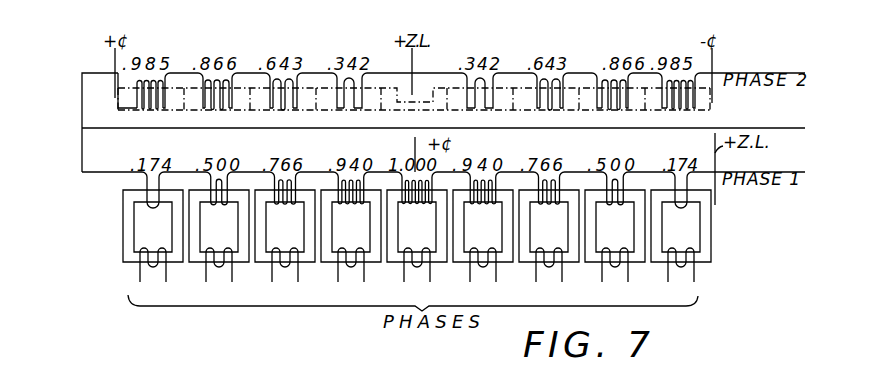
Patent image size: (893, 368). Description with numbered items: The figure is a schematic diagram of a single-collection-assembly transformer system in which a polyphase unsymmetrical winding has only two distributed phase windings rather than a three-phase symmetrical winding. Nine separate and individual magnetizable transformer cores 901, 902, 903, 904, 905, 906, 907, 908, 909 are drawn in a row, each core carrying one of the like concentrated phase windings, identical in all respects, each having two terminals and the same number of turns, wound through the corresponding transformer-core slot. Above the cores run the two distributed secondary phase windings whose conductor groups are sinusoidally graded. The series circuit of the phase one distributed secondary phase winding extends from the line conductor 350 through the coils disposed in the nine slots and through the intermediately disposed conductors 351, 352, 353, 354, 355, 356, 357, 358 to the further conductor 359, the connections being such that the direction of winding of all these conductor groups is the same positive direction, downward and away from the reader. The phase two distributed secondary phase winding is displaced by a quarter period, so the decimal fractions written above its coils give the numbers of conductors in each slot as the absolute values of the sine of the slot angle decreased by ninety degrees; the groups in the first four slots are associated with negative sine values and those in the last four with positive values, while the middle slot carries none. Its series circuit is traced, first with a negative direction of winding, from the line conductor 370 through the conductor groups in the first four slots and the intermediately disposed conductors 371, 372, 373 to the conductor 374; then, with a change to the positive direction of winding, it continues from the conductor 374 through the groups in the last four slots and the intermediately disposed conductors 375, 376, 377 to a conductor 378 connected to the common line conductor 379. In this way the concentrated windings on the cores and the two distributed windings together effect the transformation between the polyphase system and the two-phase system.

The line conductor 350 is at (738, 167).
The intermediately disposed conductor 351 is at (662, 171).
The intermediately disposed conductor 352 is at (597, 171).
The intermediately disposed conductor 353 is at (533, 171).
The intermediately disposed conductor 354 is at (477, 171).
The intermediately disposed conductor 355 is at (373, 171).
The intermediately disposed conductor 356 is at (313, 172).
The intermediately disposed conductor 357 is at (247, 172).
The intermediately disposed conductor 358 is at (183, 172).
The further conductor 359 is at (106, 172).
The line conductor 370 is at (728, 73).
The intermediately disposed conductor 371 is at (640, 73).
The intermediately disposed conductor 372 is at (578, 73).
The intermediately disposed conductor 373 is at (510, 73).
The conductor 374 is at (440, 73).
The intermediately disposed conductor 375 is at (330, 73).
The intermediately disposed conductor 376 is at (245, 73).
The intermediately disposed conductor 377 is at (178, 73).
The conductor 378 is at (98, 73).
The common line conductor 379 is at (95, 131).
The magnetizable transformer core 901 is at (697, 254).
The magnetizable transformer core 902 is at (631, 254).
The magnetizable transformer core 903 is at (565, 254).
The magnetizable transformer core 904 is at (499, 254).
The magnetizable transformer core 905 is at (433, 254).
The magnetizable transformer core 906 is at (367, 254).
The magnetizable transformer core 907 is at (301, 254).
The magnetizable transformer core 908 is at (235, 254).
The magnetizable transformer core 909 is at (169, 254).